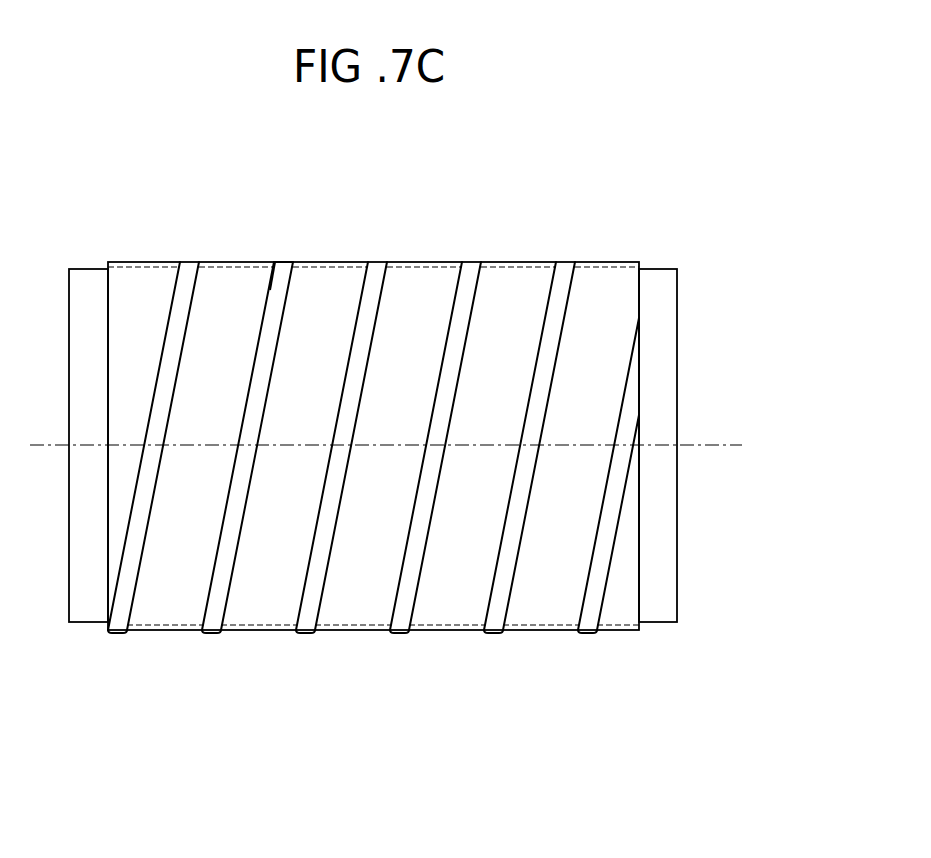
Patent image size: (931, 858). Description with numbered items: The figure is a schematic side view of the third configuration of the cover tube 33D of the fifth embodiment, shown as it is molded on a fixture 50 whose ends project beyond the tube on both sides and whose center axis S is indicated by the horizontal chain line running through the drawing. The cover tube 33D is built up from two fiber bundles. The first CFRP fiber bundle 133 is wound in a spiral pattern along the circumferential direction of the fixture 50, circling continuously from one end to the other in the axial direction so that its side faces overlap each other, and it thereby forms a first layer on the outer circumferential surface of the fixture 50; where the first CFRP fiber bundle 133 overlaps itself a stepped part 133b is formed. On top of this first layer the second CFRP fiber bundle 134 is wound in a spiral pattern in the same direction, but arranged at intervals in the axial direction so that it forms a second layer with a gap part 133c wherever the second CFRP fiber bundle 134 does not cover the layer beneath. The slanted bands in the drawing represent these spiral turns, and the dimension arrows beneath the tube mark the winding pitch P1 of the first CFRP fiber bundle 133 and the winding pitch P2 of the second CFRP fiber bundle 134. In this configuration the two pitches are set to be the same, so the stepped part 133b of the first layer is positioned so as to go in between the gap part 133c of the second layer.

The cover tube 33D is at (373, 371).
The first CFRP fiber bundle 133 is at (412, 263).
The stepped part 133b is at (280, 261).
The gap part 133c is at (282, 268).
The second CFRP fiber bundle 134 is at (323, 262).
The fixture 50 is at (678, 315).
The axis S is at (707, 450).
The winding pitch P1 is at (108, 636).
The winding pitch P2 is at (221, 636).